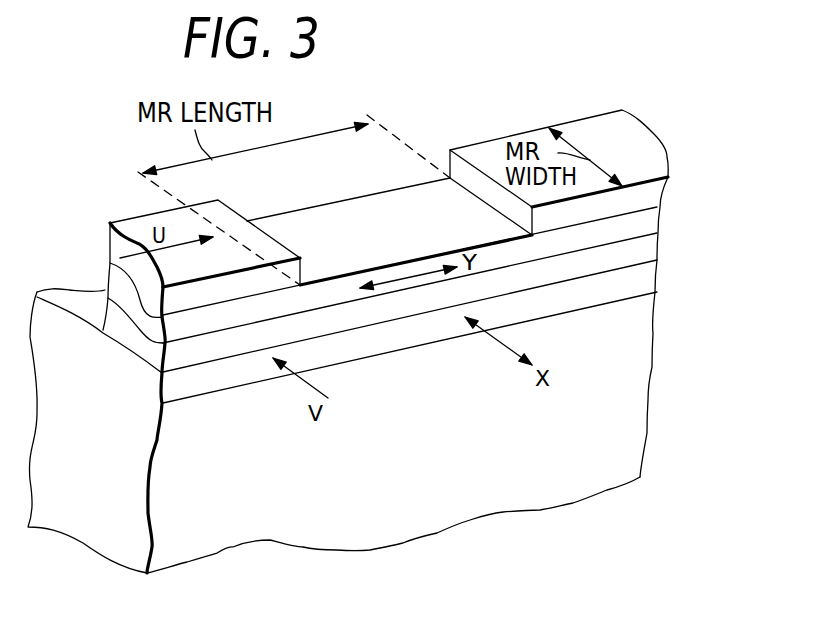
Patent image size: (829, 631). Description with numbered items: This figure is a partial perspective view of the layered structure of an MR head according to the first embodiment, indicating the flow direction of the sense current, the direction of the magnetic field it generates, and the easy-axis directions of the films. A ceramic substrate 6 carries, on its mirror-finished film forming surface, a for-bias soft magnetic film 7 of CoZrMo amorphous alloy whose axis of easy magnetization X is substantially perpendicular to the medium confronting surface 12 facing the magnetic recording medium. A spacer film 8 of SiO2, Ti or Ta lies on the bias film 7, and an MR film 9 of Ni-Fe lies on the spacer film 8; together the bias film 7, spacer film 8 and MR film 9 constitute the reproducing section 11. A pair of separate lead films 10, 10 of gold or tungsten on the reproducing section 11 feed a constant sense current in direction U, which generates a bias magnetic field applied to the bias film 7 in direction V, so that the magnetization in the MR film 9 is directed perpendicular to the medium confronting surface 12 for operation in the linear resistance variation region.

The substrate 6 is at (337, 533).
The for-bias soft magnetic film 7 is at (647, 282).
The spacer film 8 is at (647, 250).
The MR film 9 is at (658, 222).
The lead film 10 is at (111, 251).
The reproducing section 11 is at (212, 403).
The medium confronting surface 12 is at (637, 350).